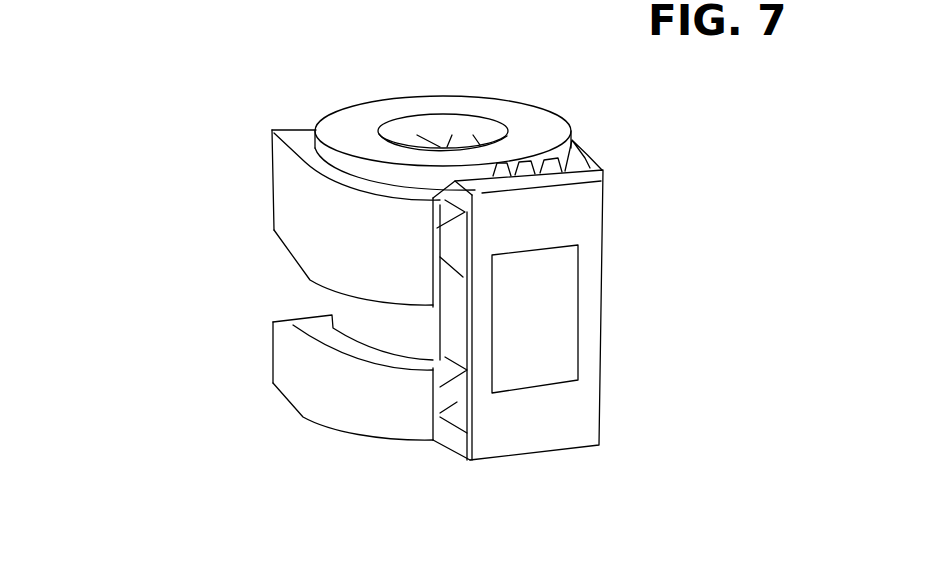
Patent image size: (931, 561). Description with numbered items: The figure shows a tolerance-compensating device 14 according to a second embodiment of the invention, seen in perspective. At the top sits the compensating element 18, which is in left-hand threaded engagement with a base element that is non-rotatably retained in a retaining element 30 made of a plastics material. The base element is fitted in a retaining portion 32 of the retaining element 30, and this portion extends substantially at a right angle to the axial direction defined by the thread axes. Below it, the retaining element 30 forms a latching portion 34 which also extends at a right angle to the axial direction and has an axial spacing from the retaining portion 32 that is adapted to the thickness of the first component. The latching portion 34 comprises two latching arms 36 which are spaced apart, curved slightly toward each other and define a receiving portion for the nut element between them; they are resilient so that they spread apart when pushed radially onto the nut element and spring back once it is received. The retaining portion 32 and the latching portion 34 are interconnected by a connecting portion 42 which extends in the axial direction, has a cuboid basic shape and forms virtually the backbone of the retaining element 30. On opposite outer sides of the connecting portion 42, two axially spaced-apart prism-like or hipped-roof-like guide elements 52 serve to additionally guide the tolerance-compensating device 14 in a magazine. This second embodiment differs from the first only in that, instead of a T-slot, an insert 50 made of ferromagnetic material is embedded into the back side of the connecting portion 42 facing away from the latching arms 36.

The tolerance-compensating device 14 is at (381, 281).
The compensating element 18 is at (425, 117).
The retaining element 30 is at (311, 217).
The retaining portion 32 is at (316, 166).
The latching portion 34 is at (342, 411).
The latching arms 36 is at (342, 436).
The connecting portion 42 is at (575, 344).
The insert 50 is at (593, 319).
The guide elements 52 is at (557, 324).